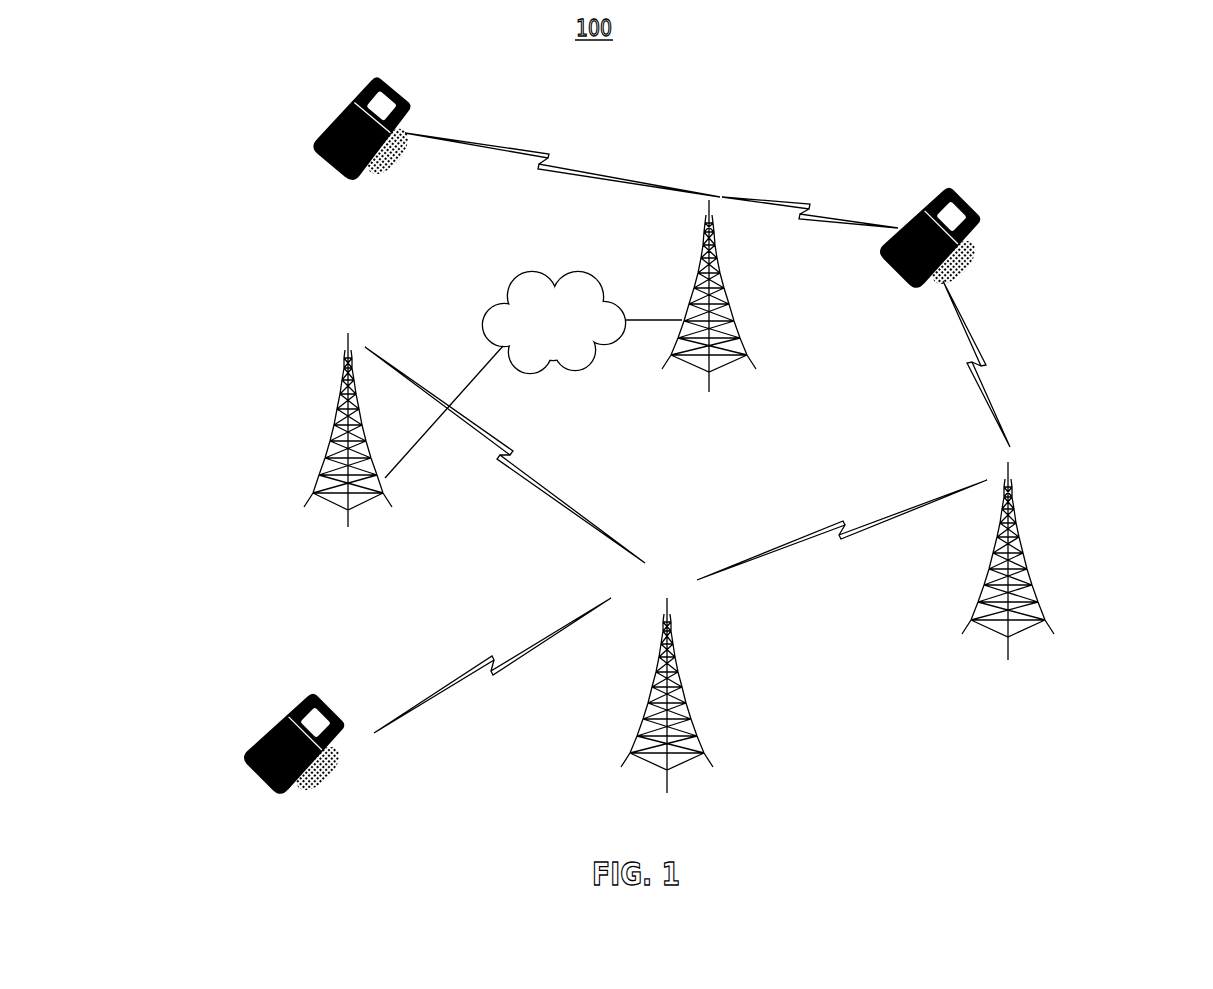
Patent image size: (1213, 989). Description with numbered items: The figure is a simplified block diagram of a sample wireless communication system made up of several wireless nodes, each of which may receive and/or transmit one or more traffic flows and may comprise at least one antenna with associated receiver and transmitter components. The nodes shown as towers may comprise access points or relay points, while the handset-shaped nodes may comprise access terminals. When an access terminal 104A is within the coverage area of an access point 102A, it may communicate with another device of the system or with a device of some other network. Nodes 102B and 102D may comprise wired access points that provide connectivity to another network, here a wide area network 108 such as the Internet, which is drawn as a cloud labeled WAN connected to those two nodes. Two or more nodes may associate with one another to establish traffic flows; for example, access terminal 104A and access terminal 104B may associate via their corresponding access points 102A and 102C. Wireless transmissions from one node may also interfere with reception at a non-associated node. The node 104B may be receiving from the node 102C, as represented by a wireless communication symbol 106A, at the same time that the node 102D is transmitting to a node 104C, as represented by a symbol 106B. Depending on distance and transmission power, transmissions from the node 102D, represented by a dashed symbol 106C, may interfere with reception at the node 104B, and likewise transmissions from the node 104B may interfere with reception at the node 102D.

The access point 102A is at (688, 692).
The node 102B is at (328, 427).
The access point 102C is at (1028, 560).
The node 102D is at (728, 291).
The access terminal 104A is at (279, 736).
The access terminal 104B is at (943, 258).
The node 104C is at (318, 148).
The wireless communication symbol 106A is at (975, 362).
The symbol 106B is at (502, 155).
The dashed symbol 106C is at (773, 210).
The wide area network 108 is at (532, 272).